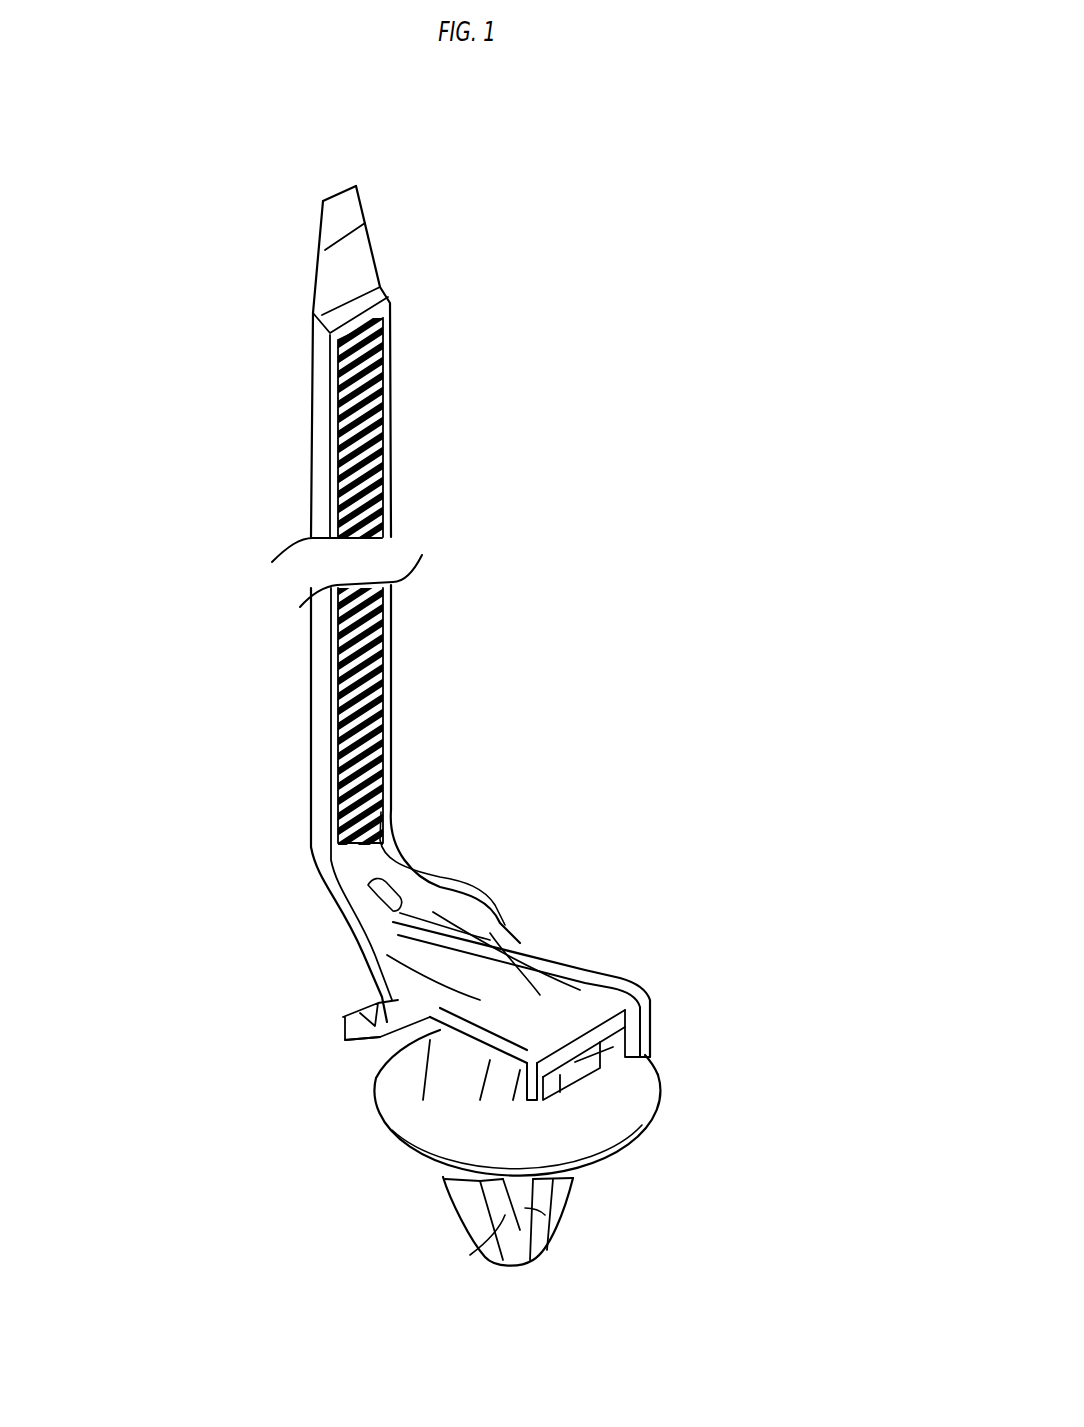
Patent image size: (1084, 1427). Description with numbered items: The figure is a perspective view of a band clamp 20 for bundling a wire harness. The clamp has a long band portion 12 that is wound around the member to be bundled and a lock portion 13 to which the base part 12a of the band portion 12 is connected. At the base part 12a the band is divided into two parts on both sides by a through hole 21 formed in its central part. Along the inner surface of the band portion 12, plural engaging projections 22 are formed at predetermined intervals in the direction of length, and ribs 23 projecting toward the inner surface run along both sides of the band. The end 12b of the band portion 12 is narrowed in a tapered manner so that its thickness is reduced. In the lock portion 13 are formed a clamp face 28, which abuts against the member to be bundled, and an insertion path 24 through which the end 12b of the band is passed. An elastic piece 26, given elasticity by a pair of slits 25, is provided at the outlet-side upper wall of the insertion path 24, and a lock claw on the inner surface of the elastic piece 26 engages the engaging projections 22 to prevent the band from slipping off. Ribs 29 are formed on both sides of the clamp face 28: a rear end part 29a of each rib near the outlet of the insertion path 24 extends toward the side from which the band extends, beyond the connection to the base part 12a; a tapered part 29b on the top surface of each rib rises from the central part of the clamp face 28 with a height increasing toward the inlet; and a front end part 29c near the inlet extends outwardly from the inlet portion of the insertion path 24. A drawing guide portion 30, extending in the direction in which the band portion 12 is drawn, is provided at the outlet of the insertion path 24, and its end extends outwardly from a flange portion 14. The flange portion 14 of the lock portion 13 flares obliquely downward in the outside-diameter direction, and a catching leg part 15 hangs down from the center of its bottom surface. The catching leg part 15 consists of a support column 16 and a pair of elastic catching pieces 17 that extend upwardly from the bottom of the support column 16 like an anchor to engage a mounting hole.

The band portion 12 is at (310, 432).
The base part 12a is at (483, 900).
The end 12b is at (350, 212).
The lock portion 13 is at (407, 1053).
The flange portion 14 is at (410, 1140).
The catching leg part 15 is at (415, 1268).
The support column 16 is at (562, 1220).
The elastic catching pieces 17 is at (548, 1208).
The band clamp 20 is at (658, 772).
The through hole 21 is at (427, 957).
The engaging projections 22 is at (380, 413).
The ribs 23 is at (390, 652).
The insertion path 24 is at (620, 1062).
The slits 25 is at (545, 1020).
The elastic piece 26 is at (490, 988).
The clamp face 28 is at (565, 980).
The ribs 29 is at (567, 973).
The rear end part 29a is at (373, 1010).
The tapered part 29b is at (627, 980).
The front end part 29c is at (650, 1008).
The drawing guide portion 30 is at (343, 1020).